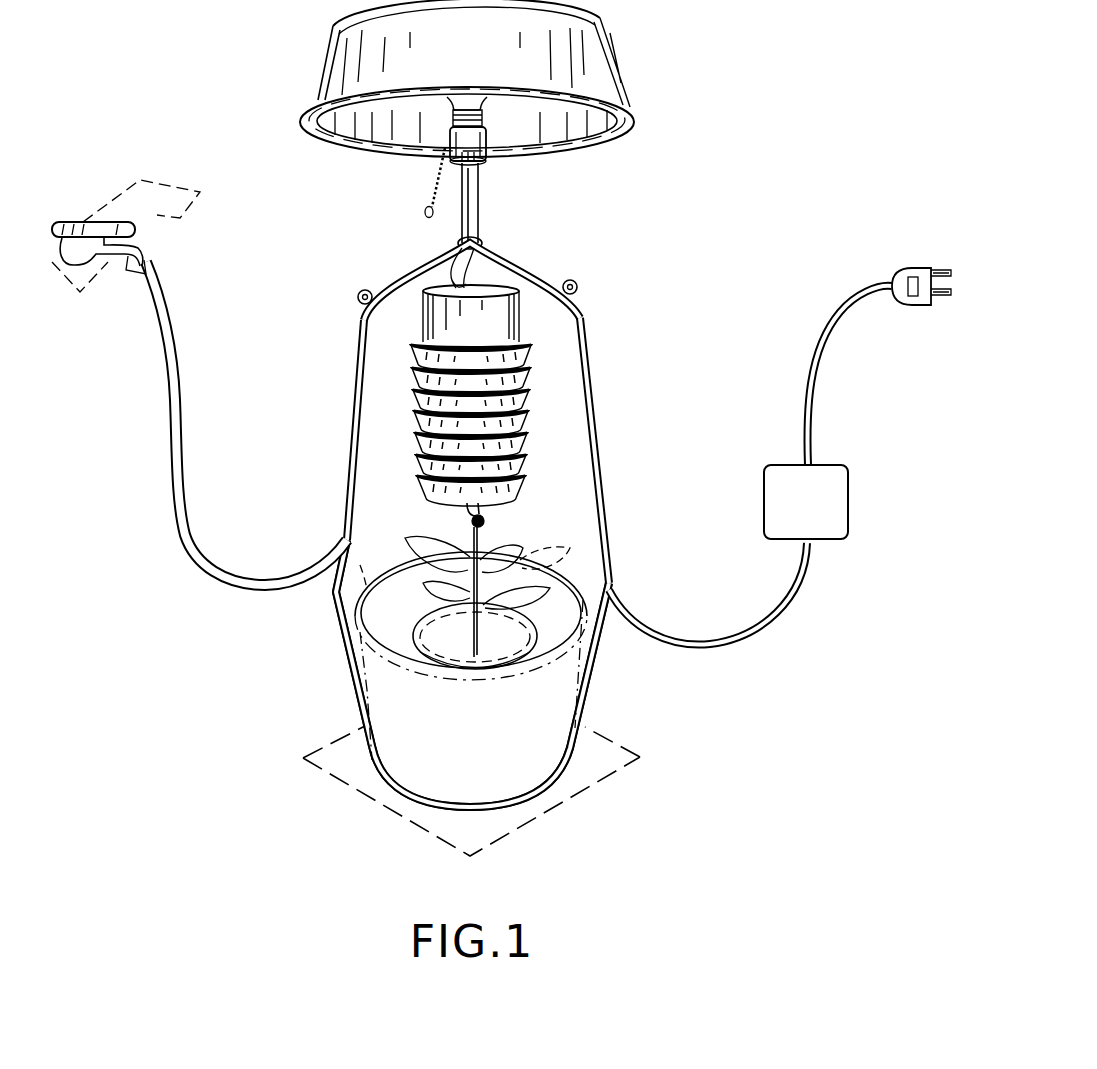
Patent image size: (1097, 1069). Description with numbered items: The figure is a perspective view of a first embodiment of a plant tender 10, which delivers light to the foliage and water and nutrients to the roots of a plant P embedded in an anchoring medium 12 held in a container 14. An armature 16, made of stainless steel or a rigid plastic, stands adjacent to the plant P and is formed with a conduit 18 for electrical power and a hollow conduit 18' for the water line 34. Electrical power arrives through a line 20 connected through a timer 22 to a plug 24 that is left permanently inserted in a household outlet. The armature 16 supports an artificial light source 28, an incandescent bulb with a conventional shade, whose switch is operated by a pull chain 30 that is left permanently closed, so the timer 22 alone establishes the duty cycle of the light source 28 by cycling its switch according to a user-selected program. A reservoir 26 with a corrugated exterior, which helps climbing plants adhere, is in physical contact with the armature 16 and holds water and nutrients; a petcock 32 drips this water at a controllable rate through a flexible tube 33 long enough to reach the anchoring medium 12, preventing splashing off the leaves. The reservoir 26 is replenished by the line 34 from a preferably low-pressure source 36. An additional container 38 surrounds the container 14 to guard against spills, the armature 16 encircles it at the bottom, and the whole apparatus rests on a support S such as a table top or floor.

The plant tender 10 is at (322, 623).
The anchoring medium 12 is at (518, 622).
The container 14 is at (408, 643).
The armature 16 is at (608, 446).
The conduit 18 is at (611, 450).
The hollow conduit 18' is at (333, 430).
The line 20 is at (700, 645).
The timer 22 is at (764, 502).
The plug 24 is at (929, 266).
The reservoir 26 is at (533, 397).
The artificial light source 28 is at (493, 98).
The pull chain 30 is at (428, 198).
The petcock 32 is at (486, 520).
The flexible tube 33 is at (488, 542).
The line 34 is at (175, 383).
The source 36 is at (80, 218).
The additional container 38 is at (443, 599).
The plant P is at (418, 531).
The support S is at (350, 767).